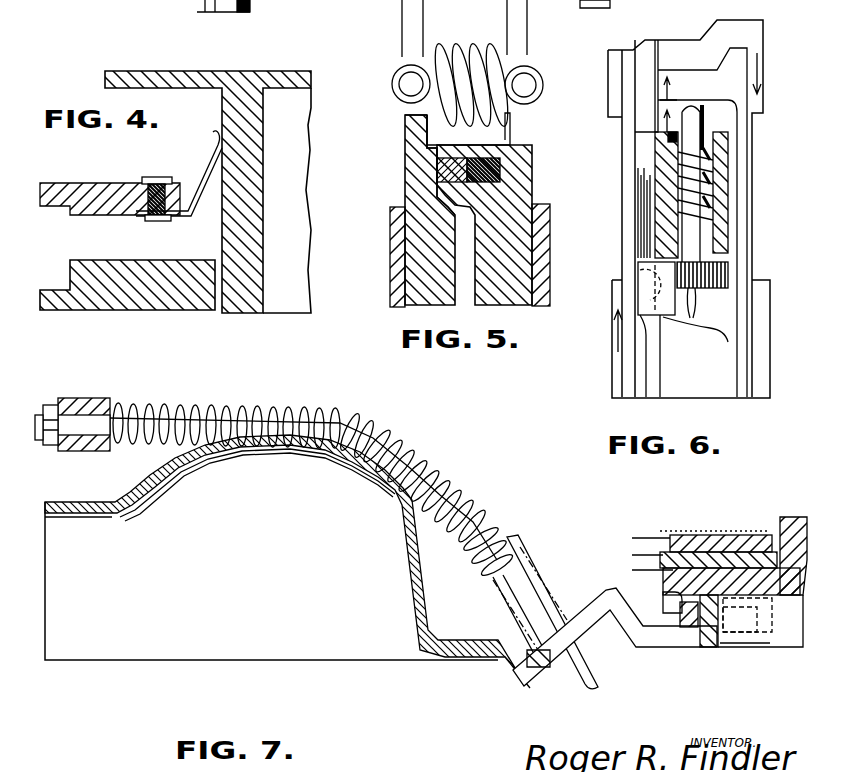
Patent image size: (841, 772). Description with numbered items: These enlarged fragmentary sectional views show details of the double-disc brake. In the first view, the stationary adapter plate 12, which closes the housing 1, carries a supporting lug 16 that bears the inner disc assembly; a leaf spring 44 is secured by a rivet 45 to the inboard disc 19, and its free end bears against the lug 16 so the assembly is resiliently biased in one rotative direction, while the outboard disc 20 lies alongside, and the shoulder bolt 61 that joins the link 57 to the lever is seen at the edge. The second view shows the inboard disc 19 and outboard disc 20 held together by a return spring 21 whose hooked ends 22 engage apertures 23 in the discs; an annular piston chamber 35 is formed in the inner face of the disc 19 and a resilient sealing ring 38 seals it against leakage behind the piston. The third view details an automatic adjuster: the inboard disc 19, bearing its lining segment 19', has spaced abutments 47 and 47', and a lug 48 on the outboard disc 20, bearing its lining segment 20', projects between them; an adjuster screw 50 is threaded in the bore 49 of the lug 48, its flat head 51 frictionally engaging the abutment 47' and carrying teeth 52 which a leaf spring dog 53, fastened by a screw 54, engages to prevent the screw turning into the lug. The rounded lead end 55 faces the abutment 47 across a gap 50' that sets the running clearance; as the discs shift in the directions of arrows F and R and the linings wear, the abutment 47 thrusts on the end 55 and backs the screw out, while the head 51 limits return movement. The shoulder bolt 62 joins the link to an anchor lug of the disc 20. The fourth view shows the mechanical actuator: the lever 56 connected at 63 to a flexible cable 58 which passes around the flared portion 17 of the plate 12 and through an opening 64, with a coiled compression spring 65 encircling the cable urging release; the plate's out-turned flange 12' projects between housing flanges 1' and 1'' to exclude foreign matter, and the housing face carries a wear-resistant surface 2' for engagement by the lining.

In FIG. 4, the adapter plate 12 is at (208, 181).
In FIG. 7, the adapter plate 12 is at (583, 641).
In FIG. 4, the supporting lug 16 is at (260, 252).
In FIG. 4, the outboard disc 20 is at (127, 299).
In FIG. 5, the outboard disc 20 is at (401, 211).
In FIG. 6, the outboard disc 20 is at (644, 406).
In FIG. 4, the leaf spring 44 is at (208, 168).
In FIG. 4, the rivet 45 is at (158, 224).
In FIG. 4, the shoulder bolt 61 is at (200, 12).
In FIG. 5, the link 57 is at (464, 28).
In FIG. 5, the return spring 21 is at (468, 52).
In FIG. 5, the hooked end 22 is at (398, 73).
In FIG. 5, the aperture 23 is at (407, 112).
In FIG. 5, the inboard disc 19 is at (495, 209).
In FIG. 6, the inboard disc 19 is at (685, 198).
In FIG. 5, the piston chamber 35 is at (505, 184).
In FIG. 5, the sealing ring 38 is at (500, 172).
In FIG. 6, the shoulder bolt 62 is at (595, 16).
In FIG. 6, the abutment 47 is at (691, 203).
In FIG. 6, the friction lining segment 19' is at (774, 41).
In FIG. 7, the friction lining segment 19' is at (730, 553).
In FIG. 6, the arrow R is at (760, 76).
In FIG. 6, the gap 50' is at (618, 103).
In FIG. 6, the rounded lead end 55 is at (706, 100).
In FIG. 6, the adjuster screw 50 is at (718, 195).
In FIG. 6, the lug 48 is at (726, 208).
In FIG. 6, the threaded bore 49 is at (722, 236).
In FIG. 6, the screw head 51 is at (730, 270).
In FIG. 6, the leaf spring dog 53 is at (640, 262).
In FIG. 6, the screw 54 is at (634, 284).
In FIG. 6, the teeth 52 is at (690, 330).
In FIG. 6, the abutment 47' is at (684, 356).
In FIG. 6, the arrow F is at (608, 343).
In FIG. 6, the friction lining segment 20' is at (666, 339).
In FIG. 7, the flared portion 17 is at (110, 662).
In FIG. 7, the cable 58 is at (284, 405).
In FIG. 7, the lever 56 is at (37, 404).
In FIG. 7, the cable connection 63 is at (55, 440).
In FIG. 7, the compression spring 65 is at (214, 407).
In FIG. 7, the opening 64 is at (548, 672).
In FIG. 7, the out-turned flange 12' is at (699, 639).
In FIG. 7, the wear-resistant surface 2' is at (652, 539).
In FIG. 7, the housing 1 is at (762, 604).
In FIG. 7, the housing flange 1' is at (656, 599).
In FIG. 7, the housing flange 1'' is at (758, 644).